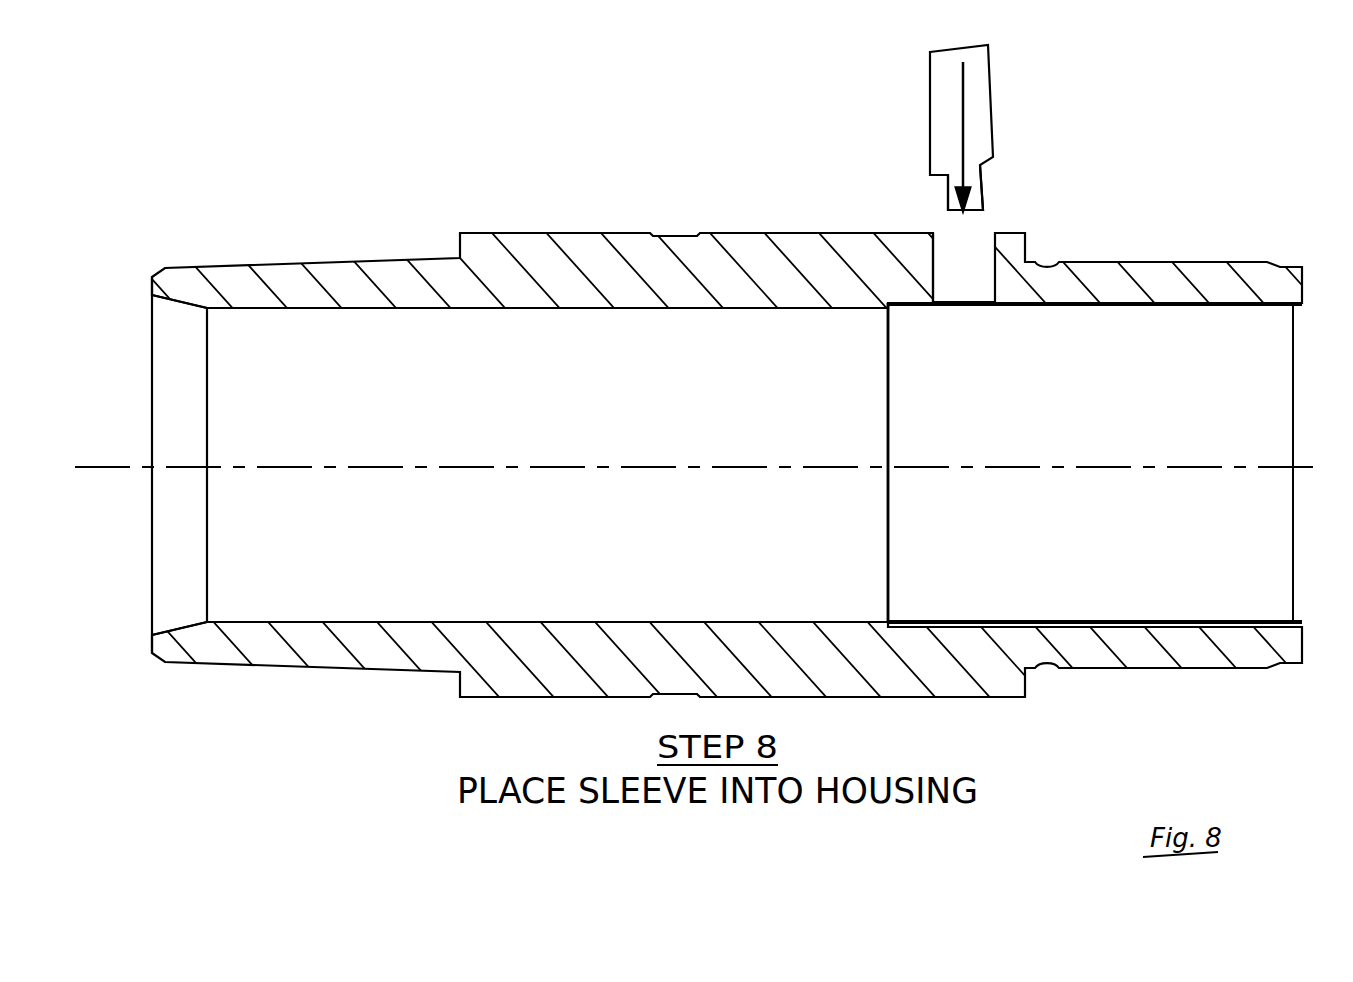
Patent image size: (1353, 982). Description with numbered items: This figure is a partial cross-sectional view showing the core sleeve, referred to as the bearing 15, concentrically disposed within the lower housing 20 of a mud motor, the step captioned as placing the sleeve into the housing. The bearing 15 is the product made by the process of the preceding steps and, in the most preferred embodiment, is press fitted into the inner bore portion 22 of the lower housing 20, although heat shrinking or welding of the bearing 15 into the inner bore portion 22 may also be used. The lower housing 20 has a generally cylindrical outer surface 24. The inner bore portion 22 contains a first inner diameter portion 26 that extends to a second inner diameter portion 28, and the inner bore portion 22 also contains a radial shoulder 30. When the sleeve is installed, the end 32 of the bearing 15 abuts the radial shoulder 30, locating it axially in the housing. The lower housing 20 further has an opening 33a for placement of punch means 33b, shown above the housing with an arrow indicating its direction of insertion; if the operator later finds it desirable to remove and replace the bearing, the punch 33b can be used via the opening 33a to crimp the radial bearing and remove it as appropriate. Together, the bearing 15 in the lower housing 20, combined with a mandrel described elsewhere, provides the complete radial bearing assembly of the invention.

The bearing 15 is at (849, 347).
The lower housing 20 is at (758, 215).
The inner bore portion 22 is at (547, 465).
The outer surface 24 is at (593, 230).
The first inner diameter portion 26 is at (381, 312).
The second inner diameter portion 28 is at (893, 303).
The radial shoulder 30 is at (886, 301).
The end of the bearing 32 is at (887, 568).
The opening 33a is at (981, 240).
The punch means 33b is at (925, 80).